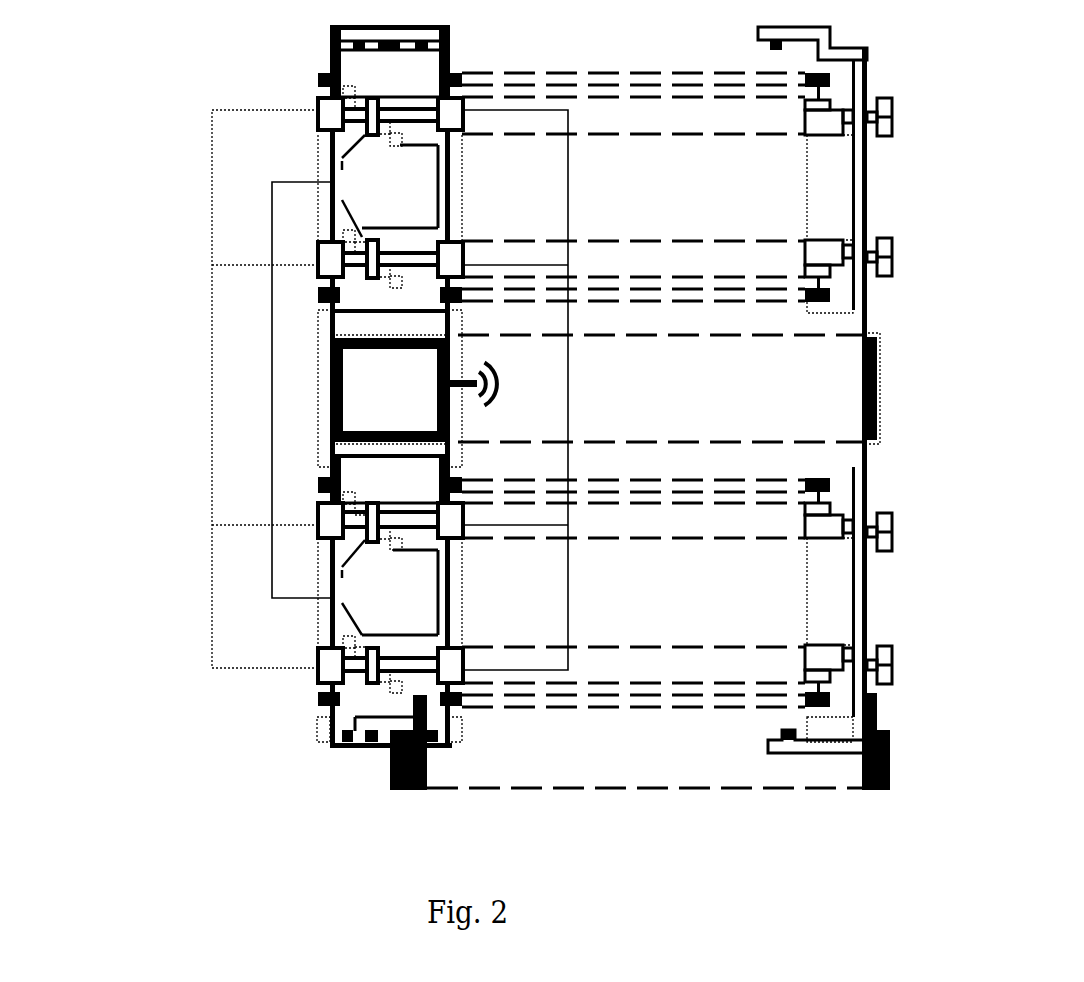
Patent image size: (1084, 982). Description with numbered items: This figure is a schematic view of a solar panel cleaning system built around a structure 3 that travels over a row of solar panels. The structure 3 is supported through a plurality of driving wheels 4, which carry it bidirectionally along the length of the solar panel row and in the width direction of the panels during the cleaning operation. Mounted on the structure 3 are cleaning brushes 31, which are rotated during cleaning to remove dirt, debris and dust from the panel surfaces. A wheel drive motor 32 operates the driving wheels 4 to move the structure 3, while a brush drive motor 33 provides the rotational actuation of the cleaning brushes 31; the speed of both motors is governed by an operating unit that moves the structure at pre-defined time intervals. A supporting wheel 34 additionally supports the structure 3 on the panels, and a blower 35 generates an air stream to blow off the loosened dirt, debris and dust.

The structure 3 is at (330, 48).
The driving wheels 4 is at (345, 80).
The cleaning brushes 31 is at (330, 388).
The wheel drive motor 32 is at (200, 378).
The brush drive motor 33 is at (390, 385).
The supporting wheel 34 is at (765, 50).
The blower 35 is at (378, 777).